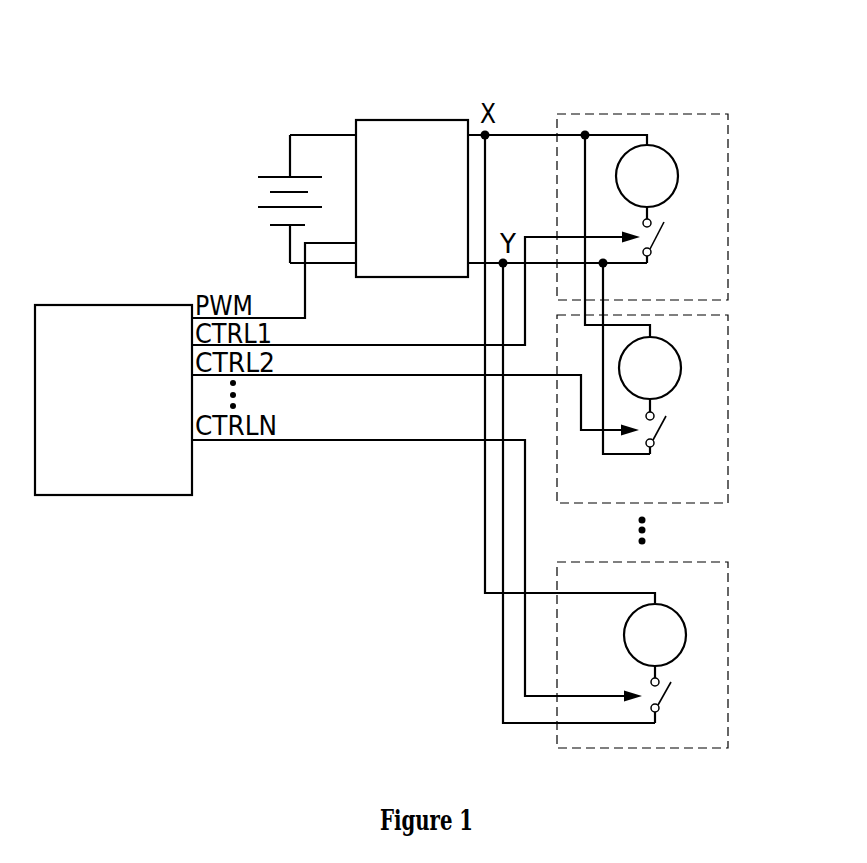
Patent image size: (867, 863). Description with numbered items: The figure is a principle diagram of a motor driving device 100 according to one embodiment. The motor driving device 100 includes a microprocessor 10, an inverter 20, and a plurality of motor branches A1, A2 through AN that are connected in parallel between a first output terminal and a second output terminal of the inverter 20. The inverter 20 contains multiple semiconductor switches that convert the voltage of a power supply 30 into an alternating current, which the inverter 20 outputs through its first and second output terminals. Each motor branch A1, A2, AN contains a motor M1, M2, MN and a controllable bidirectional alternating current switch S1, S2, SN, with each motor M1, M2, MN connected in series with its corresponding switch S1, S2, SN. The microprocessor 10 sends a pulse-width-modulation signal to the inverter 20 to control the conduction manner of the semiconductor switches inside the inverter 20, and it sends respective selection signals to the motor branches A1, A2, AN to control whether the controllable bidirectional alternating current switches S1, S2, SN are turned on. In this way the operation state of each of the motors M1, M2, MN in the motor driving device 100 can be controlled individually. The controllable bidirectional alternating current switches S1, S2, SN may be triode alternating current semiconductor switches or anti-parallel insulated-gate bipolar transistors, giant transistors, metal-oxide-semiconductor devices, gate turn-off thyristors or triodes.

The motor driving device 100 is at (538, 49).
The microprocessor 10 is at (160, 305).
The inverter 20 is at (438, 120).
The power supply 30 is at (267, 173).
The motor branch A1 is at (728, 218).
The motor branch A2 is at (728, 408).
The motor branch AN is at (728, 637).
The motor M1 is at (647, 176).
The motor M2 is at (650, 368).
The motor MN is at (655, 635).
The controllable bidirectional alternating current switch S1 is at (671, 235).
The controllable bidirectional alternating current switch S2 is at (674, 428).
The controllable bidirectional alternating current switch SN is at (684, 694).